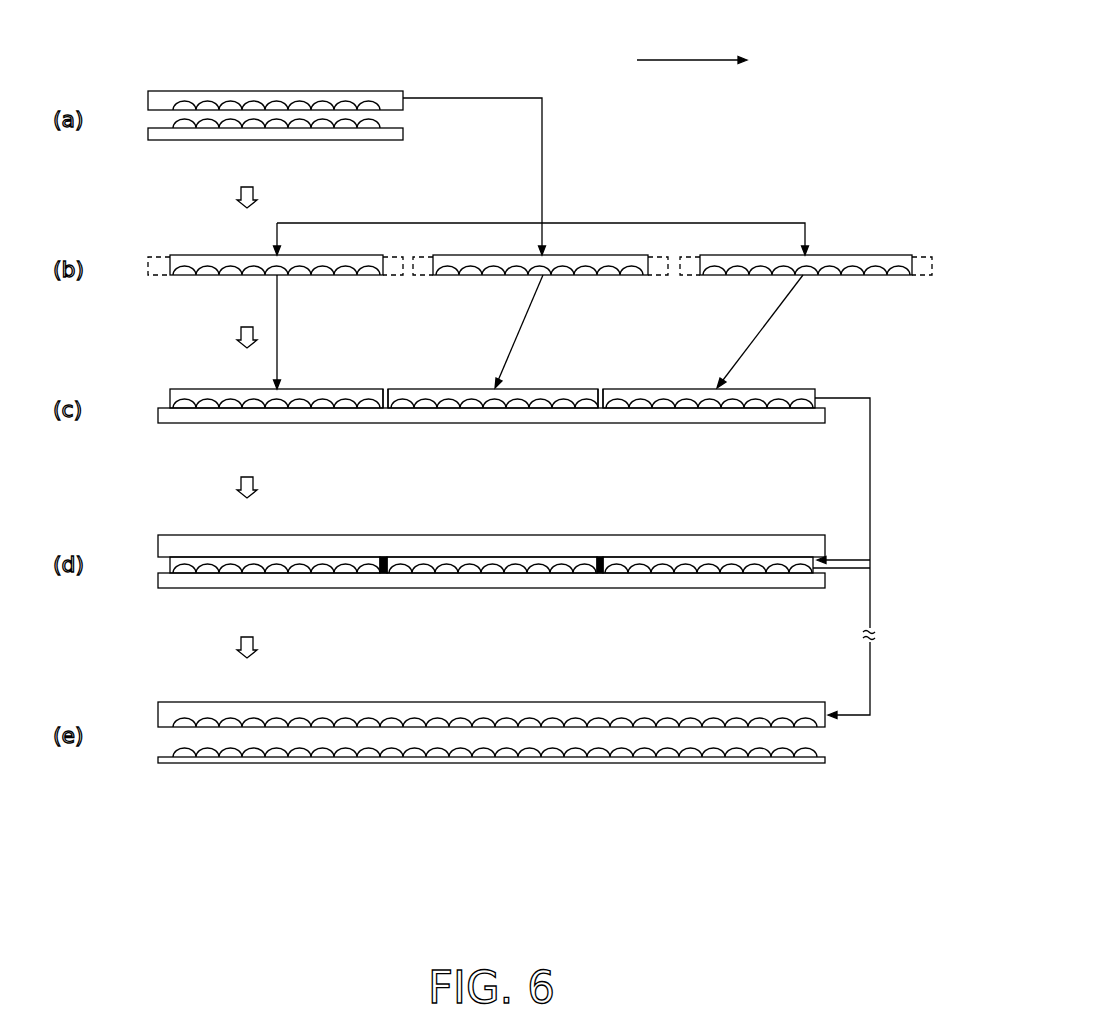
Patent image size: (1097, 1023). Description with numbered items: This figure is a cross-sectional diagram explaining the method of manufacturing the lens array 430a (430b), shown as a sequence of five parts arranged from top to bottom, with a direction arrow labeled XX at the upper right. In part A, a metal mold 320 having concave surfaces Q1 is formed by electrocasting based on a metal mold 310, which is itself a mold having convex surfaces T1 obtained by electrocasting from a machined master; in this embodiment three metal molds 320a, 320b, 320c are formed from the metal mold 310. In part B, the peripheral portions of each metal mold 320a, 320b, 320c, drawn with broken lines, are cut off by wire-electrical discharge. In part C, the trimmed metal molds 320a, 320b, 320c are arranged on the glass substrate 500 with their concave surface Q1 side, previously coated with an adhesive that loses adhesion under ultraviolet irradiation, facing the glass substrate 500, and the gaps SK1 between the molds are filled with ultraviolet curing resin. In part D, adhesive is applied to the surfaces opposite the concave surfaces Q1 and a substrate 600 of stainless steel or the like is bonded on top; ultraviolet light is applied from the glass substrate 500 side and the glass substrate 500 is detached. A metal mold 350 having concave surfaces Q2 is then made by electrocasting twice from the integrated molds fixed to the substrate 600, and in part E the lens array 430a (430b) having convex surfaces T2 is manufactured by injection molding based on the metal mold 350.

The metal mold 320 is at (278, 95).
The metal mold 310 is at (310, 133).
The concave surfaces Q1 is at (173, 112).
The convex surfaces T1 is at (180, 128).
The metal mold 320a is at (307, 263).
The metal mold 320b is at (557, 262).
The metal mold 320c is at (823, 262).
The gaps SK1 is at (388, 392).
The glass substrate 500 is at (362, 417).
The substrate 600 is at (457, 545).
The metal mold 350 is at (483, 708).
The concave surfaces Q2 is at (178, 727).
The convex surfaces T2 is at (178, 745).
The lens array 430a is at (491, 777).
The lens array 430b is at (488, 758).
The direction XX is at (711, 62).